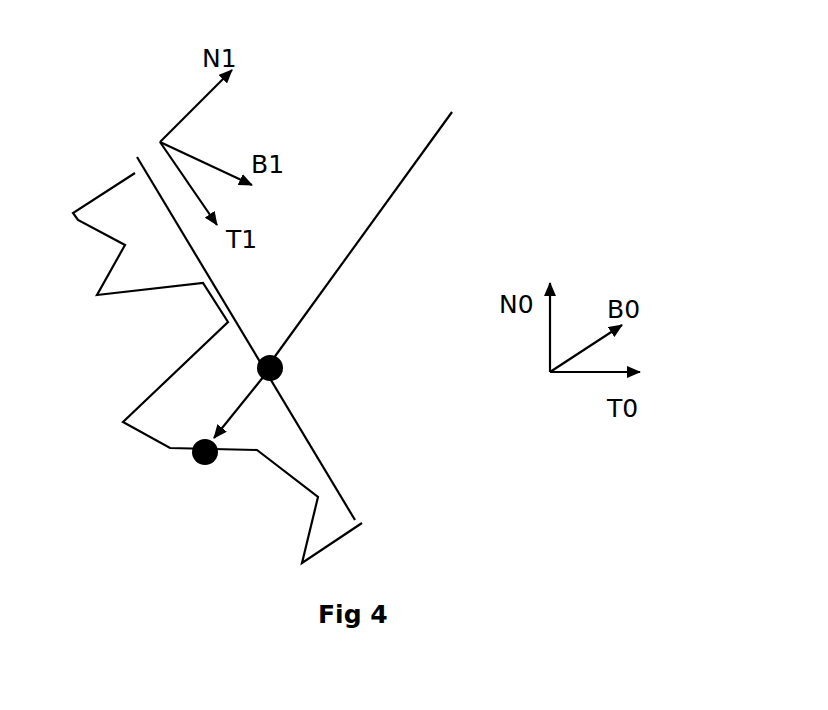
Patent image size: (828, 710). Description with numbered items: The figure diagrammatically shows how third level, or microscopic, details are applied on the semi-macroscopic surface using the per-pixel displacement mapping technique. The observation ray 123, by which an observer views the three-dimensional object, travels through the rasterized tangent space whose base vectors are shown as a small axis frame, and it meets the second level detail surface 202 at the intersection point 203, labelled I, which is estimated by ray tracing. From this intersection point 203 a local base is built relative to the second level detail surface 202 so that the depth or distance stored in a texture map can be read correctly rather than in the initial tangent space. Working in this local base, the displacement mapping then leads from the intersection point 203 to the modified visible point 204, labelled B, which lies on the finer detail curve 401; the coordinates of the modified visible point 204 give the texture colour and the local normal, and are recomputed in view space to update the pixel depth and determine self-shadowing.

The observation ray 123 is at (417, 162).
The second level detail surface 202 is at (337, 483).
The intersection point 203 is at (285, 368).
The modified visible point 204 is at (193, 463).
The curve 401 is at (148, 398).